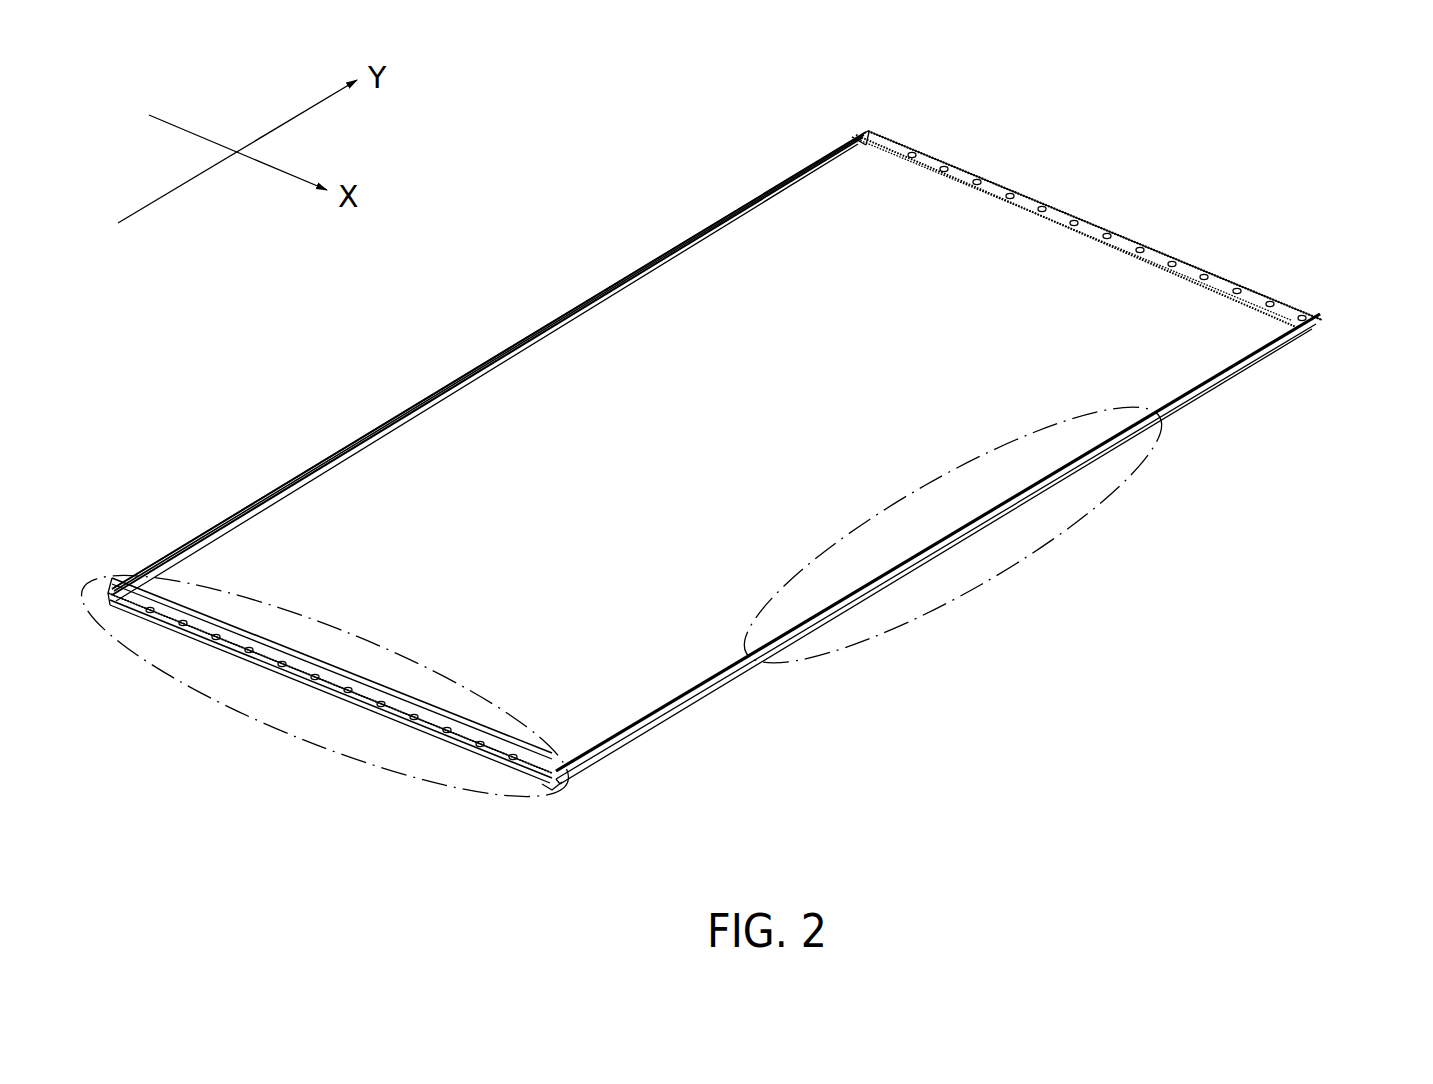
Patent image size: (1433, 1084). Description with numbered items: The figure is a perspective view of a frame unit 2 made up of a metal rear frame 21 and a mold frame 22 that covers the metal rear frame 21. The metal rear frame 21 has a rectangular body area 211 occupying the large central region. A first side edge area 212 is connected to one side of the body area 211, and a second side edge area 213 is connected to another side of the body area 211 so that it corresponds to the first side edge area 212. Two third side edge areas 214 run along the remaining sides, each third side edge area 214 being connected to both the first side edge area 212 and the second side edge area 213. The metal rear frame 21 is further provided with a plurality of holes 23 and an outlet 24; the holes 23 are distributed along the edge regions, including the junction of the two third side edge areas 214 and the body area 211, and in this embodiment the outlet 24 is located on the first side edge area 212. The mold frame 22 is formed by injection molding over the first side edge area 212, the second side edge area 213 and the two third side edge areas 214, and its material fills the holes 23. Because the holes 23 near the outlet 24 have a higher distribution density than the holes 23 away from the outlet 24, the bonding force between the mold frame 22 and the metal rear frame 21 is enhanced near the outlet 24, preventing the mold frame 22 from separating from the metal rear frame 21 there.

The frame unit 2 is at (765, 472).
The metal rear frame 21 is at (719, 412).
The body area 211 is at (1148, 353).
The first side edge area 212 is at (432, 749).
The second side edge area 213 is at (1250, 288).
The third side edge areas 214 is at (510, 343).
The mold frame 22 is at (255, 497).
The holes 23 is at (1145, 243).
The outlet 24 is at (535, 772).